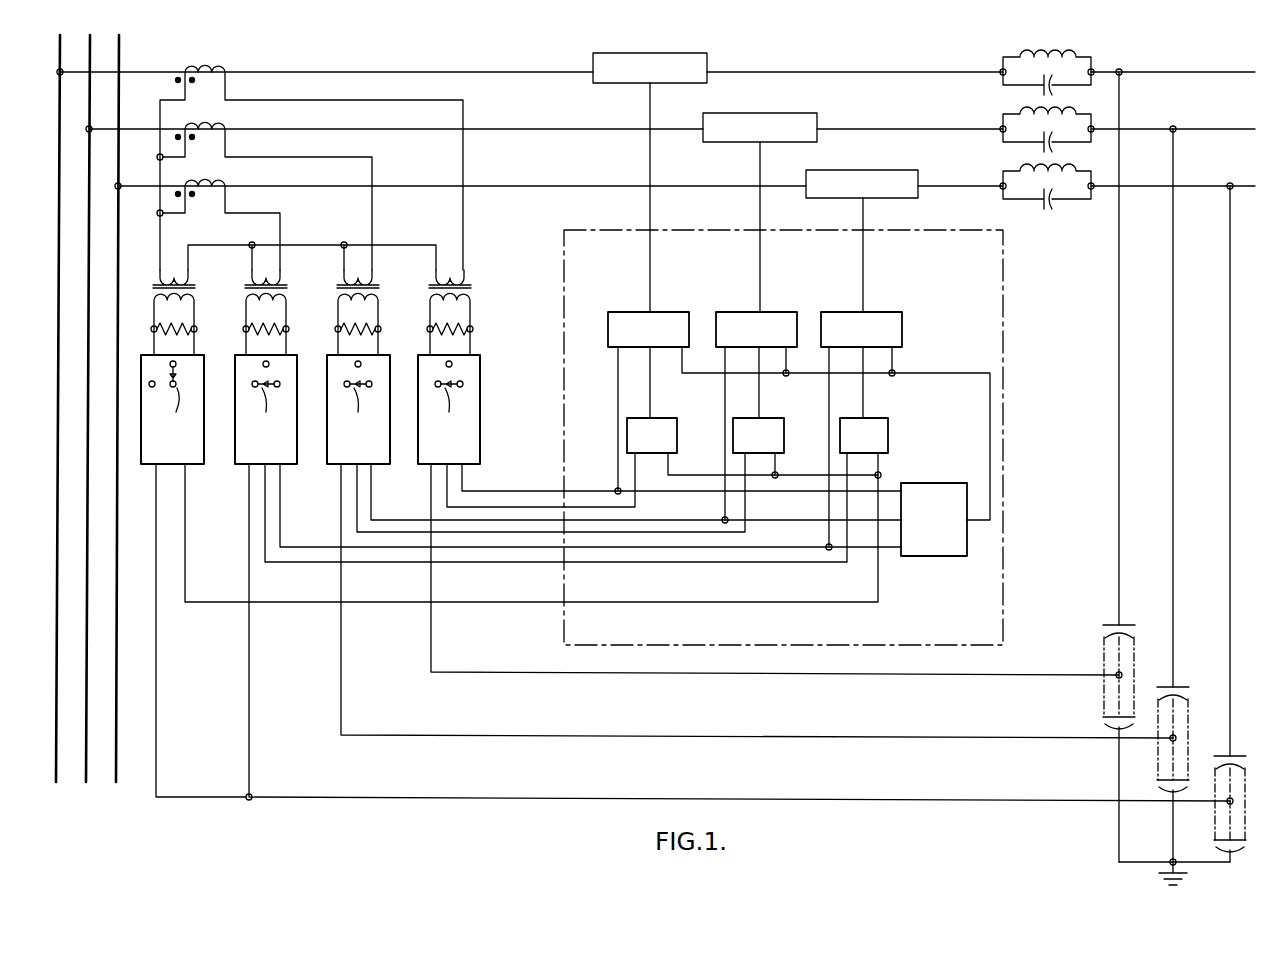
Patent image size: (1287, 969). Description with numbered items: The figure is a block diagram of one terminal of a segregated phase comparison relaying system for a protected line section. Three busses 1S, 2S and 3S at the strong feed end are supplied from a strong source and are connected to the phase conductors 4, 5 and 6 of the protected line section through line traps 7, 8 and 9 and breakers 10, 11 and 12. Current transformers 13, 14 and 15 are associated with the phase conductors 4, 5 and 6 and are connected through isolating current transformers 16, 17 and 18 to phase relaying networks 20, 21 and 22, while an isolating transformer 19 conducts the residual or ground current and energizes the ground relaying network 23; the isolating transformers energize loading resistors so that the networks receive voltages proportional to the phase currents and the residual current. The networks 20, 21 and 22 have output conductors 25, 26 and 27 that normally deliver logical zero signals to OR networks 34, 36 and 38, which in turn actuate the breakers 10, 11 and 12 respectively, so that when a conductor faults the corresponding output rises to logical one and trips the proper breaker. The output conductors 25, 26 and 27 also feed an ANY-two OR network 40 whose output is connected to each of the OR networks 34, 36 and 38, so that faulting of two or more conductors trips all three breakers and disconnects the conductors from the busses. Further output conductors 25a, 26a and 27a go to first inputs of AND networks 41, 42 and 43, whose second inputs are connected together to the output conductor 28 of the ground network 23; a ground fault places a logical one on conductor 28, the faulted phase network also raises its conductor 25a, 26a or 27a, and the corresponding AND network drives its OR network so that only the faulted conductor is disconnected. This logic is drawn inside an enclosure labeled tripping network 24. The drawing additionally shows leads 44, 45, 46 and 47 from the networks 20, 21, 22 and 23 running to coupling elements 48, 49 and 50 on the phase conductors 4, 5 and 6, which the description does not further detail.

The bus 1S is at (60, 201).
The bus 2S is at (90, 244).
The bus 3S is at (118, 280).
The phase conductor 4 is at (1176, 72).
The phase conductor 5 is at (1204, 129).
The phase conductor 6 is at (1204, 186).
The line trap 7 is at (1003, 82).
The line trap 8 is at (1003, 139).
The line trap 9 is at (1003, 196).
The breaker 10 is at (698, 58).
The breaker 11 is at (808, 114).
The breaker 12 is at (910, 170).
The current transformer 13 is at (218, 70).
The current transformer 14 is at (218, 127).
The current transformer 15 is at (218, 184).
The isolating current transformer 16 is at (472, 288).
The isolating current transformer 17 is at (380, 288).
The isolating current transformer 18 is at (288, 288).
The isolating transformer 19 is at (196, 288).
The phase relaying network 20 is at (480, 372).
The phase relaying network 21 is at (390, 372).
The phase relaying network 22 is at (297, 372).
The ground relaying network 23 is at (204, 372).
The tripping network 24 is at (1003, 250).
The output conductor 25 is at (462, 486).
The output conductor 25a is at (447, 496).
The output conductor 26 is at (371, 486).
The output conductor 26a is at (357, 518).
The output conductor 27 is at (280, 500).
The output conductor 27a is at (265, 530).
The output conductor 28 is at (185, 500).
The OR network 34 is at (672, 312).
The OR network 36 is at (778, 312).
The OR network 38 is at (884, 312).
The ANY "2" OR network 40 is at (935, 483).
The AND network 41 is at (672, 418).
The AND network 42 is at (775, 418).
The AND network 43 is at (882, 418).
The conductor 44 is at (431, 640).
The conductor 45 is at (341, 694).
The conductor 46 is at (249, 706).
The conductor 47 is at (156, 686).
The capacitor 48 is at (1104, 645).
The capacitor 49 is at (1182, 717).
The capacitor 50 is at (1238, 787).